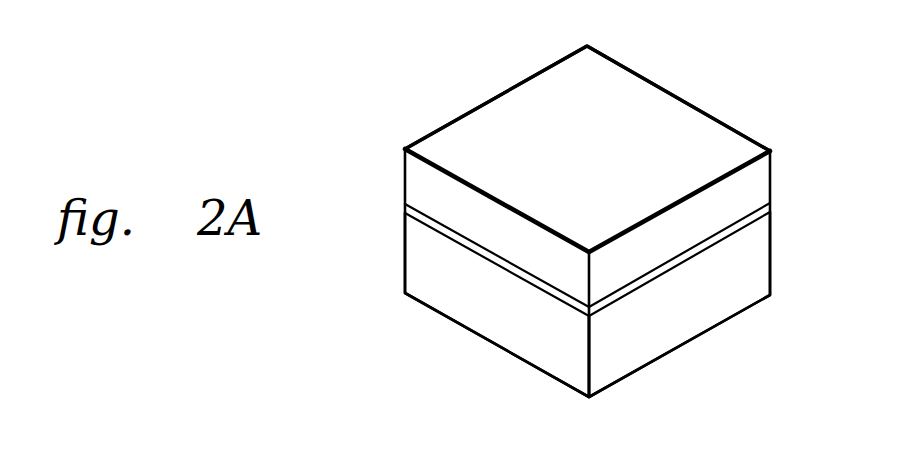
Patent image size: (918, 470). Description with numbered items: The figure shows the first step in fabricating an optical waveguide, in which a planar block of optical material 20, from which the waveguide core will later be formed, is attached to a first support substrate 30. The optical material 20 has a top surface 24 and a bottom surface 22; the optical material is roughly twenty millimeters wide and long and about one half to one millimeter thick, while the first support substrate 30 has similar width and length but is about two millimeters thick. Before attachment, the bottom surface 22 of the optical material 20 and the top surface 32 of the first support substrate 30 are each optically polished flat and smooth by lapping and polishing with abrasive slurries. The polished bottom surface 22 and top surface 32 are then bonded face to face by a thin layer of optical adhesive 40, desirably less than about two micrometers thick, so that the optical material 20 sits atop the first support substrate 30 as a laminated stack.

The optical material 20 is at (648, 122).
The top surface 24 is at (523, 110).
The bottom surface 22 is at (423, 222).
The top surface 32 is at (750, 213).
The first support substrate 30 is at (482, 293).
The layer of optical adhesive 40 is at (558, 298).